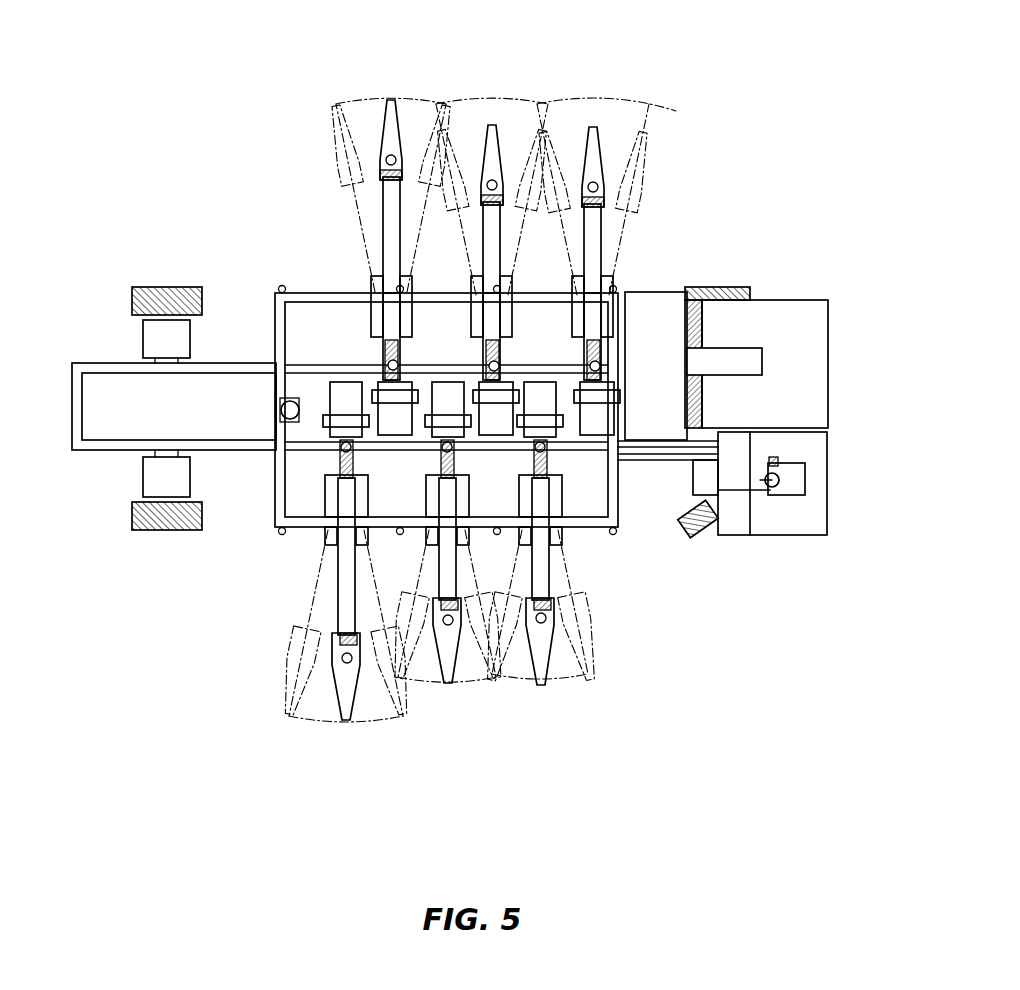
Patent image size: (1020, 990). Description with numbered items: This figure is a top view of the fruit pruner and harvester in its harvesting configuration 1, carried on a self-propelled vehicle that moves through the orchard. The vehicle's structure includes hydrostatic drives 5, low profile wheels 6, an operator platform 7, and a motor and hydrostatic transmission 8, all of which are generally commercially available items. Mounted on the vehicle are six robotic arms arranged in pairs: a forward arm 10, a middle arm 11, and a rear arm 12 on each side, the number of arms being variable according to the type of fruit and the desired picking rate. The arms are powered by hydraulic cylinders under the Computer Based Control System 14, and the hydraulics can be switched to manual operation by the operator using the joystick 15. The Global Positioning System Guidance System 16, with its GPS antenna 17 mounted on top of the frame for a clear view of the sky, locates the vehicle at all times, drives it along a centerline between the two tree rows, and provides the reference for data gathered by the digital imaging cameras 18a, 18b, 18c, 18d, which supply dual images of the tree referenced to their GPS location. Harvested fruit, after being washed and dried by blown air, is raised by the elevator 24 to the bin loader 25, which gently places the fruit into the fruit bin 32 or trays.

The fruit harvesting configuration 1 is at (416, 742).
The hydrostatic drives 5 is at (158, 338).
The low profile wheels 6 is at (162, 292).
The operator platform 7 is at (812, 528).
The motor and hydrostatic transmission 8 is at (222, 420).
The forward arm 10 is at (400, 208).
The middle arm 11 is at (500, 160).
The rear arm 12 is at (610, 150).
The Computer Based Control System 14 is at (743, 475).
The joystick 15 is at (765, 490).
The Global Positioning System Guidance System 16 is at (732, 528).
The GPS antenna 17 is at (283, 405).
The DIS camera 18a is at (284, 288).
The DIS camera 18b is at (414, 290).
The DIS camera 18c is at (512, 290).
The DIS camera 18d is at (615, 288).
The elevator 24 is at (667, 322).
The bin loader 25 is at (750, 363).
The fruit bin 32 is at (813, 325).